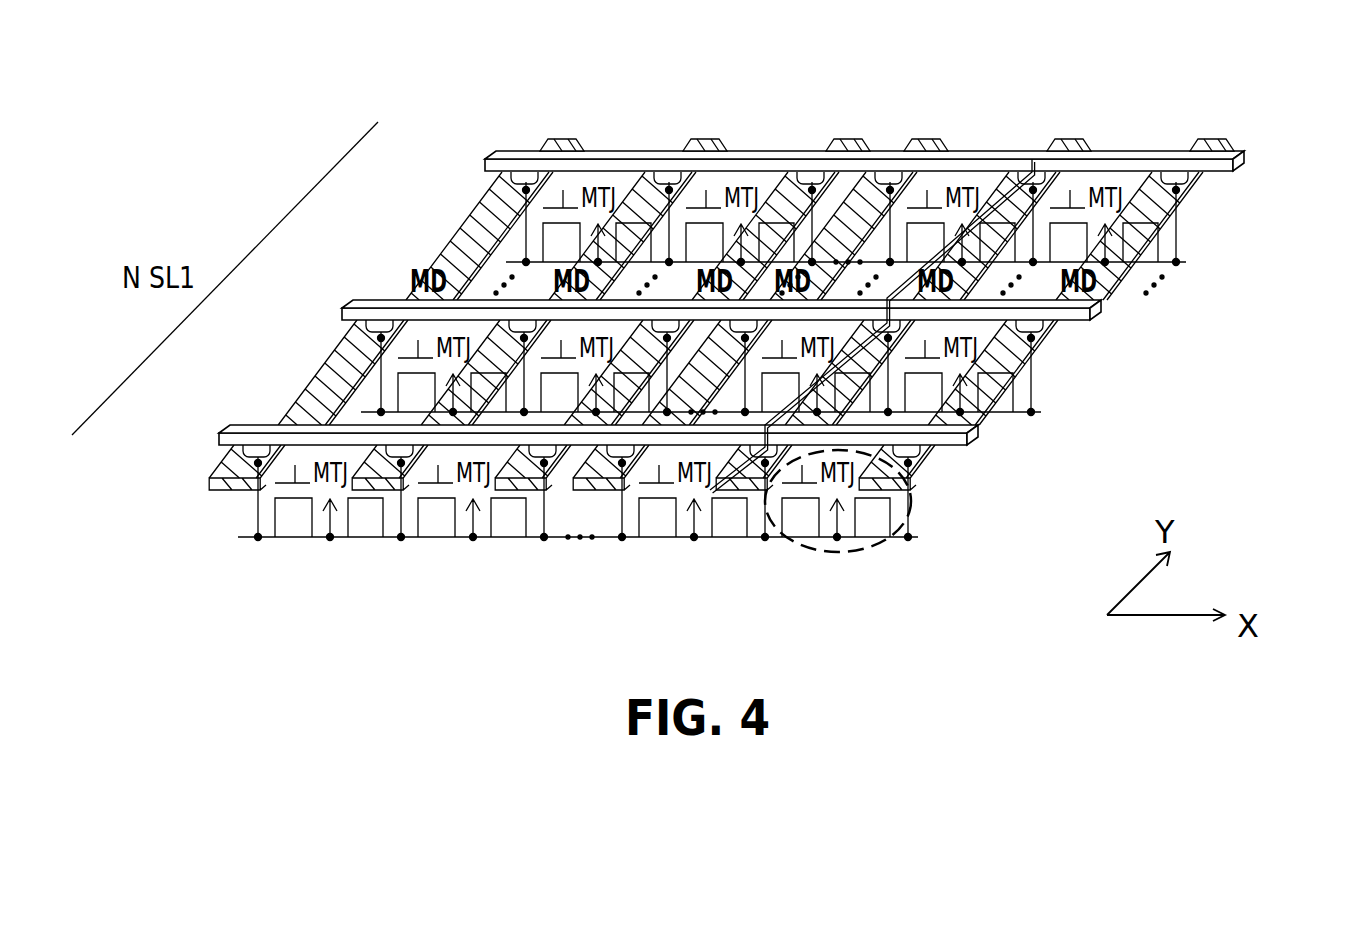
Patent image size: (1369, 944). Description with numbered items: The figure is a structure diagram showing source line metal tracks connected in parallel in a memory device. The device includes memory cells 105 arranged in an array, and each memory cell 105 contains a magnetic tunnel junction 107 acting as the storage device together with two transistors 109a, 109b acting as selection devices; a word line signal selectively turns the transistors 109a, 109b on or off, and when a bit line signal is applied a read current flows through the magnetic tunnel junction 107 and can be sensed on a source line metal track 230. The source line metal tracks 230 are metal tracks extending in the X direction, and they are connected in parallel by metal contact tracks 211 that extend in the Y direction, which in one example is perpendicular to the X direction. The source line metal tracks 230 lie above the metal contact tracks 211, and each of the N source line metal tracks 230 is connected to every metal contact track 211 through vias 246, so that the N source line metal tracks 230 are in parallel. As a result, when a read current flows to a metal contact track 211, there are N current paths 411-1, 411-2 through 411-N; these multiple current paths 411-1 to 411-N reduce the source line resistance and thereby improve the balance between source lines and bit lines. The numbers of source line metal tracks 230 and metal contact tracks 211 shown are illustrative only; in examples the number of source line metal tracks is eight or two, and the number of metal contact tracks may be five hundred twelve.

The metal contact track MD 211 is at (556, 138).
The source line metal track 230 is at (722, 272).
The via VD 246 is at (710, 490).
The current path 411-1 is at (288, 427).
The current path 411-2 is at (410, 300).
The current path 411-N is at (557, 150).
The memory cell 105 is at (777, 530).
The MTJ 107 is at (837, 542).
The transistor 109a is at (798, 500).
The transistor 109b is at (873, 500).